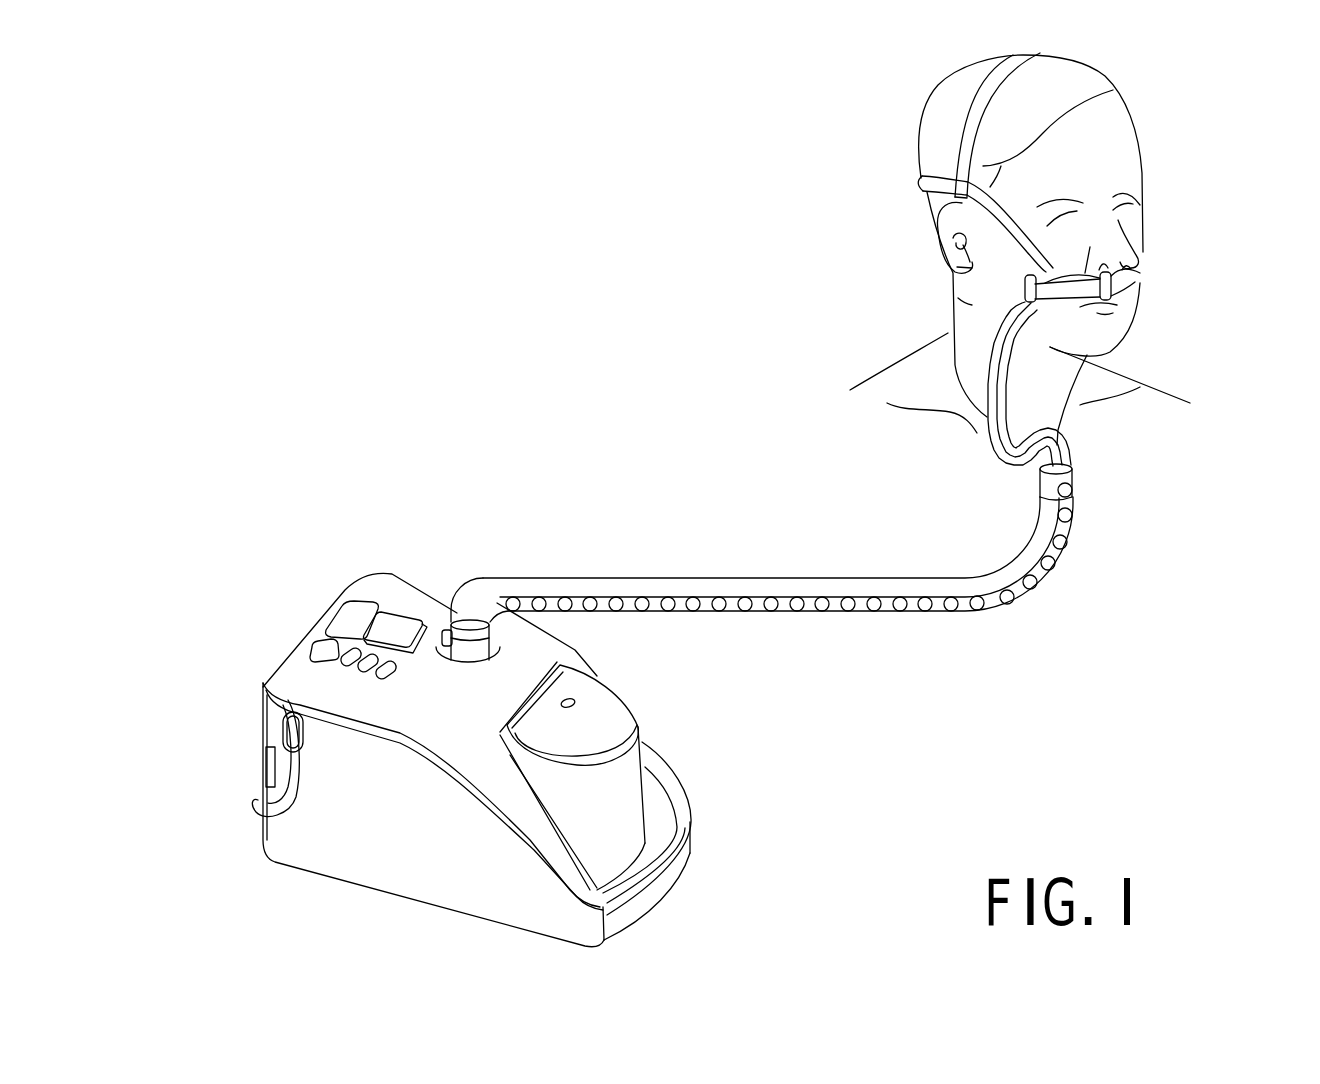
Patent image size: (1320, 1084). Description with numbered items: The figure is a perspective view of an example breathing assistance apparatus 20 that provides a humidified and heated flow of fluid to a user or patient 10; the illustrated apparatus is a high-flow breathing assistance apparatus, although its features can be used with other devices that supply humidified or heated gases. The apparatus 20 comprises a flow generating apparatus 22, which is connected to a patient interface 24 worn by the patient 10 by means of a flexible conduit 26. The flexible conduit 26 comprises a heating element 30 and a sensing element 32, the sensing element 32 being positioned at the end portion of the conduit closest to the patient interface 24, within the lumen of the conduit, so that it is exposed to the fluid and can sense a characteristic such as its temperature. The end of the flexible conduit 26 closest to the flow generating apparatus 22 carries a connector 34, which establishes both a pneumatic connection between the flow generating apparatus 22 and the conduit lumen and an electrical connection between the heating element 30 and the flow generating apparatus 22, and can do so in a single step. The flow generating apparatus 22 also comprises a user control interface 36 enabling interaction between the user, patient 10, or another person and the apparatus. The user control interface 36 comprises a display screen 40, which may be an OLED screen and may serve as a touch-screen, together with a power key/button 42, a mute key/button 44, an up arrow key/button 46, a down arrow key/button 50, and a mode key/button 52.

The patient 10 is at (952, 303).
The breathing assistance apparatus 20 is at (412, 218).
The flow generating apparatus 22 is at (294, 547).
The patient interface 24 is at (1147, 277).
The flexible conduit 26 is at (748, 580).
The heating element 30 is at (888, 616).
The sensing element 32 is at (1082, 488).
The connector 34 is at (450, 626).
The user control interface 36 is at (292, 588).
The display screen 40 is at (400, 611).
The power key/button 42 is at (365, 610).
The mute key/button 44 is at (318, 650).
The up arrow key/button 46 is at (336, 680).
The down arrow key/button 50 is at (357, 680).
The mode key/button 52 is at (379, 682).